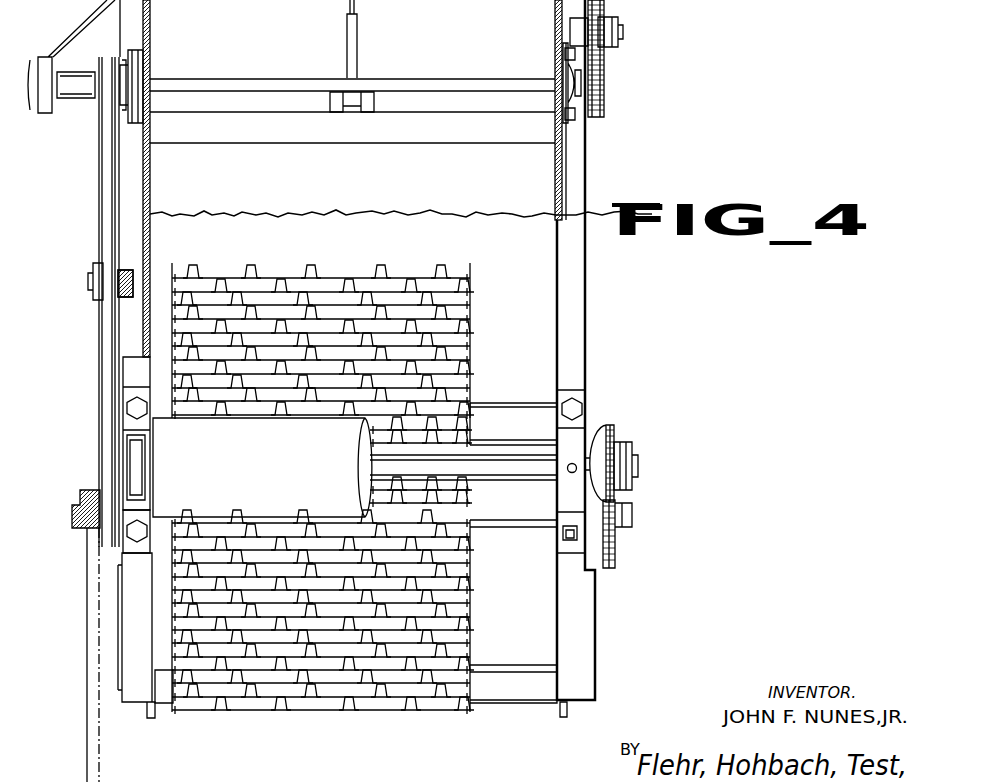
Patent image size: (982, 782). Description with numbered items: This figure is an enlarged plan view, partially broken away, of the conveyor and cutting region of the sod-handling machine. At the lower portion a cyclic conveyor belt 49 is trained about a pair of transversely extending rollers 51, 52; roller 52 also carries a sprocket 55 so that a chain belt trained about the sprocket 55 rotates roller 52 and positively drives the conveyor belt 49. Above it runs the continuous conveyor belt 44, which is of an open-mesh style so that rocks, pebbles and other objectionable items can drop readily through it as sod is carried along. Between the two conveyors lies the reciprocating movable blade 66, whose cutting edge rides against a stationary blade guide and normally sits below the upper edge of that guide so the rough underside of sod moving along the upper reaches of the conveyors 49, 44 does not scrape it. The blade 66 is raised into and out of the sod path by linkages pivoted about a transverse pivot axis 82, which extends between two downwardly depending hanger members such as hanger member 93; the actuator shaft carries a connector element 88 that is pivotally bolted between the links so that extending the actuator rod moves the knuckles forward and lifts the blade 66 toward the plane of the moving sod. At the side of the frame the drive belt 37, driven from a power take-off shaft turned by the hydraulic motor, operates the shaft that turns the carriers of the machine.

The hanger member 93 is at (115, 56).
The connector element 88 is at (212, 61).
The pivot axis 82 is at (478, 6).
The continuous conveyor belt 44 is at (427, 278).
The reciprocating movable blade 66 is at (390, 458).
The sprocket 55 is at (518, 505).
The roller 52 is at (490, 530).
The cyclic conveyor belt 49 is at (450, 625).
The roller 51 is at (497, 690).
The drive belt 37 is at (103, 743).